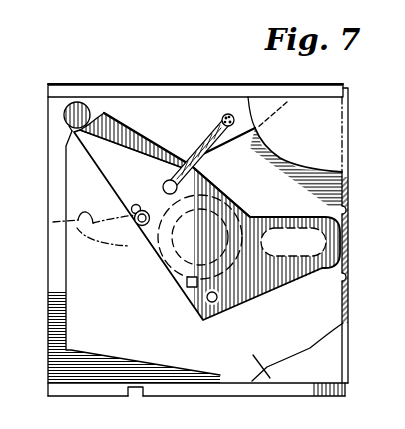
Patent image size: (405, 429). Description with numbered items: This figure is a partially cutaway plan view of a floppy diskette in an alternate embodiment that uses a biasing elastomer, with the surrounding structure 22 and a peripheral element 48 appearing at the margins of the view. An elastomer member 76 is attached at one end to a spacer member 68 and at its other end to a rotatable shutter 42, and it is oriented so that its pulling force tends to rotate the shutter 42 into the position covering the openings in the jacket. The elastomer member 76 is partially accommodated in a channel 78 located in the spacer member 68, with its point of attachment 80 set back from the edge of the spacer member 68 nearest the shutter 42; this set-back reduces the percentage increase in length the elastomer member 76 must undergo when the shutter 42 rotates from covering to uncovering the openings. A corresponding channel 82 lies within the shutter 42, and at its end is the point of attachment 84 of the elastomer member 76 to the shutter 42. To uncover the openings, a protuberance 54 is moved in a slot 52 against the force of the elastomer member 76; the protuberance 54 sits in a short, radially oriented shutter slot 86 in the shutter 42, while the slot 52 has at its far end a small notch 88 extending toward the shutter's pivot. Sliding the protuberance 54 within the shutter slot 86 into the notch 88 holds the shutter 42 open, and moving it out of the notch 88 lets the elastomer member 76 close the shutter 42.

The housing 22 is at (343, 88).
The shutter 42 is at (255, 272).
The mounting bolt 48 is at (398, 414).
The slot 52 is at (121, 244).
The protuberance 54 is at (141, 228).
The spacer member 68 is at (111, 106).
The elastomer member 76 is at (213, 136).
The channel 78 is at (232, 168).
The point of attachment 80 is at (232, 113).
The channel 82 is at (178, 168).
The point of attachment 84 is at (162, 188).
The shutter slot 86 is at (134, 210).
The notch 88 is at (53, 222).